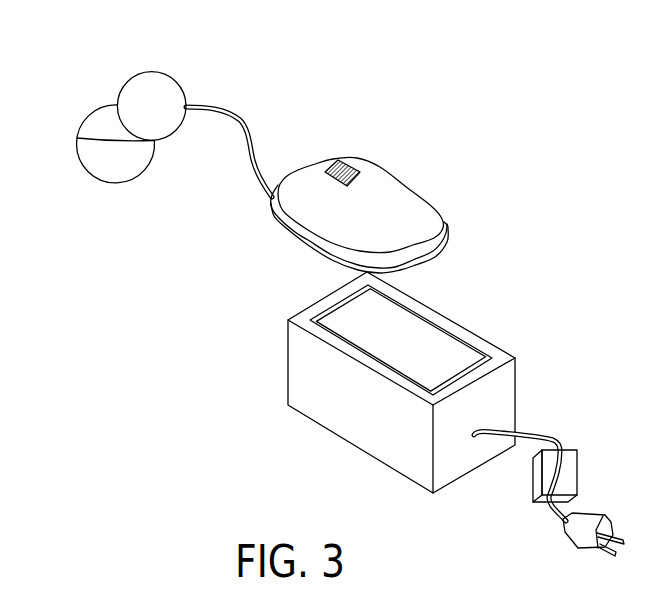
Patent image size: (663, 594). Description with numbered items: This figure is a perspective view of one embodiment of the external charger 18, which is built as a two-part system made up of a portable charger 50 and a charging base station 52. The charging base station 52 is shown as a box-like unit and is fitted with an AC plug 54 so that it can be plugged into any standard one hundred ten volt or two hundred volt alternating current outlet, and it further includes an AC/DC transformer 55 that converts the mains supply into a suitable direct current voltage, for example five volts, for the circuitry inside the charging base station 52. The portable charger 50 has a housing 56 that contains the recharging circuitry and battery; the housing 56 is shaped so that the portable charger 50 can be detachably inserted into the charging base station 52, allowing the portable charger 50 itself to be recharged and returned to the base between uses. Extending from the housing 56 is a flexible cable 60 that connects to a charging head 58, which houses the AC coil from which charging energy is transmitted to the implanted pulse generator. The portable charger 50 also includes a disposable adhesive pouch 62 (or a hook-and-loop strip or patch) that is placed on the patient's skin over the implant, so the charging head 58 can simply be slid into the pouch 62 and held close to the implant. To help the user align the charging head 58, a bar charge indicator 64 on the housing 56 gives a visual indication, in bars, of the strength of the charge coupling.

The external charger 18 is at (264, 244).
The portable charger 50 is at (360, 196).
The charging base station 52 is at (305, 366).
The AC plug 54 is at (585, 517).
The AC/DC transformer 55 is at (537, 488).
The housing 56 is at (368, 177).
The charging head 58 is at (155, 83).
The flexible cable 60 is at (243, 120).
The adhesive pouch 62 is at (80, 162).
The bar charge indicator 64 is at (335, 165).